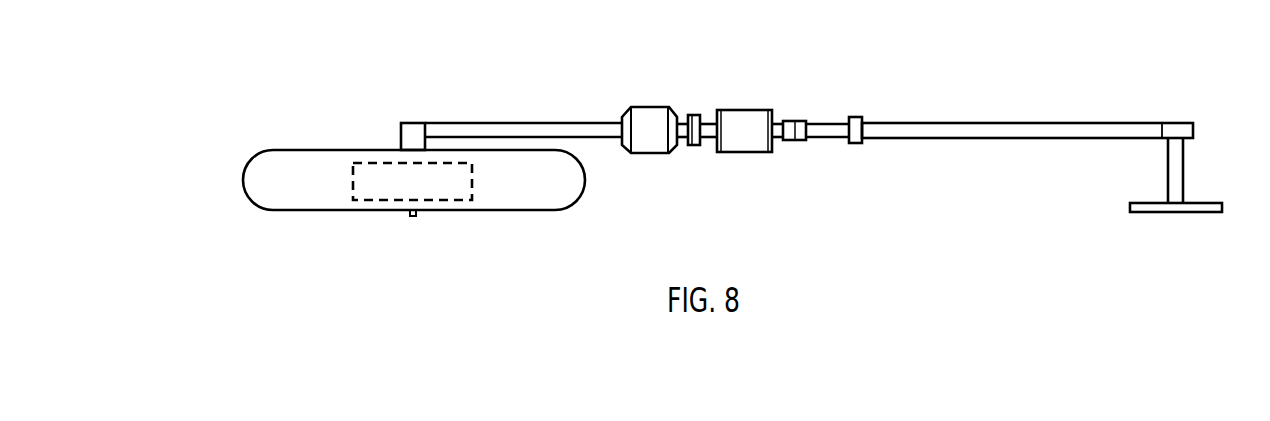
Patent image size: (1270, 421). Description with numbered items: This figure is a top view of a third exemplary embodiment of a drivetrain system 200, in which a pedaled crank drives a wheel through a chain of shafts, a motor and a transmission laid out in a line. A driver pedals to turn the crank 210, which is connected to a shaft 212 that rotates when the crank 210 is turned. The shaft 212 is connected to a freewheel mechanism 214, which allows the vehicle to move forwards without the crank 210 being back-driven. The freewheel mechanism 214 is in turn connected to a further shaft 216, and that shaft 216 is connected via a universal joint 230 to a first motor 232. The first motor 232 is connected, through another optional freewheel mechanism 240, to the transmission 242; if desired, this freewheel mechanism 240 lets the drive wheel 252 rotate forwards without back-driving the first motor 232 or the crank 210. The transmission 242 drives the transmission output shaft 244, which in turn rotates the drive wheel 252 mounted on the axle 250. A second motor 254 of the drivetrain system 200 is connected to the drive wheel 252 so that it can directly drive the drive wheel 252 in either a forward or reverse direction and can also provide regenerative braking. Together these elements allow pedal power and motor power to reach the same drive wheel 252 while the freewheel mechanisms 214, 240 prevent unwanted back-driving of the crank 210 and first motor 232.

The drivetrain system 200 is at (283, 66).
The drive wheel 252 is at (288, 150).
The second motor 254 is at (355, 185).
The axle 250 is at (407, 218).
The transmission output shaft 244 is at (559, 122).
The transmission 242 is at (648, 155).
The freewheel mechanism 240 is at (701, 114).
The first motor 232 is at (766, 154).
The universal joint 230 is at (804, 119).
The shaft 216 is at (828, 139).
The freewheel mechanism 214 is at (862, 116).
The shaft 212 is at (1088, 122).
The crank 210 is at (1146, 212).